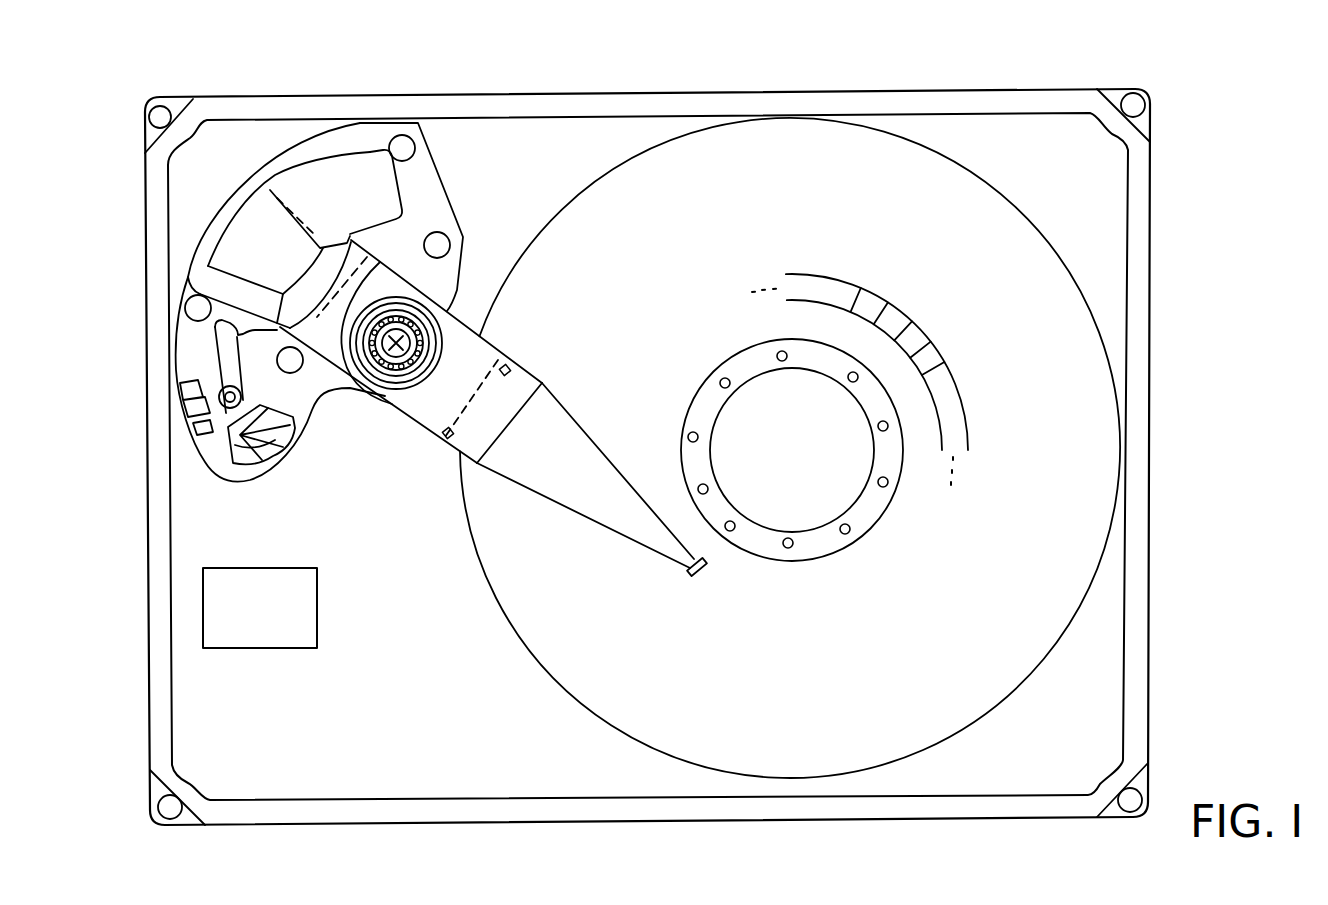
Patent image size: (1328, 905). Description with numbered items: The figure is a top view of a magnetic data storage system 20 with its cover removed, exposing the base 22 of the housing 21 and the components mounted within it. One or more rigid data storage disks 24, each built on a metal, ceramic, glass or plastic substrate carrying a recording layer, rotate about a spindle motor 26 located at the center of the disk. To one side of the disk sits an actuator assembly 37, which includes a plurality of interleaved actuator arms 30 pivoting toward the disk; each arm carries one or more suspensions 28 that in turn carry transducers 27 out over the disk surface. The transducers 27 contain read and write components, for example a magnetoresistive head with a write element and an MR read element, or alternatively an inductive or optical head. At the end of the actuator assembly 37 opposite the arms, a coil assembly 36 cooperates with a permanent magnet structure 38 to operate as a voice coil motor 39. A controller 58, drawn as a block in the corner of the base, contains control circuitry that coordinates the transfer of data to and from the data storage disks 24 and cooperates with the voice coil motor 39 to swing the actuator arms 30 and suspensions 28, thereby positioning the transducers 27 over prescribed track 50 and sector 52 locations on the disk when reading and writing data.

The magnetic data storage system 20 is at (594, 56).
The housing 21 is at (477, 812).
The base 22 is at (328, 812).
The rigid data storage disk 24 is at (836, 216).
The spindle motor 26 is at (822, 487).
The transducer 27 is at (705, 573).
The suspension 28 is at (543, 478).
The actuator arm 30 is at (425, 414).
The coil assembly 36 is at (258, 188).
The actuator assembly 37 is at (355, 422).
The permanent magnet structure 38 is at (413, 174).
The voice coil motor 39 is at (365, 240).
The track 50 is at (1006, 412).
The sector 52 is at (961, 333).
The controller 58 is at (252, 610).